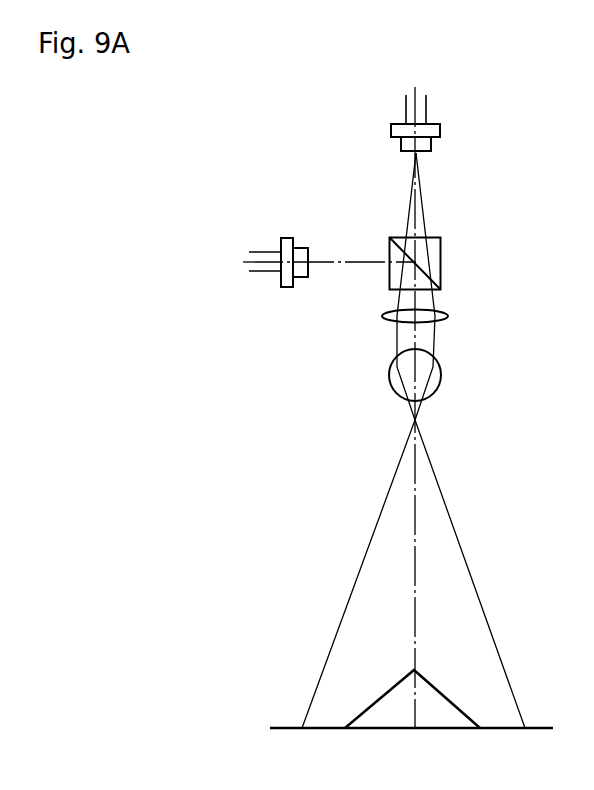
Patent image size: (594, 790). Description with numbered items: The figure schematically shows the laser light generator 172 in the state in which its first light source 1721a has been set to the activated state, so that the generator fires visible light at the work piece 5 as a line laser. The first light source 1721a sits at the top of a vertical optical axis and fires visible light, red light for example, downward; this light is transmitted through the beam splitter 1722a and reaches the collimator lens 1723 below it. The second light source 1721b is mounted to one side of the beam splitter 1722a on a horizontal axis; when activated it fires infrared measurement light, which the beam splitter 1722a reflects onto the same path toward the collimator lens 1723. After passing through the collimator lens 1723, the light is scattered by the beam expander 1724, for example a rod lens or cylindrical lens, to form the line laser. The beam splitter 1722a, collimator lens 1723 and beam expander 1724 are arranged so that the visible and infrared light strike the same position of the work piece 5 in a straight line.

The laser light generator 172 is at (308, 142).
The first light source 1721a is at (441, 134).
The second light source 1721b is at (288, 237).
The beam splitter 1722a is at (441, 254).
The collimator lens 1723 is at (449, 317).
The beam expander 1724 is at (442, 373).
The work piece 5 is at (383, 693).